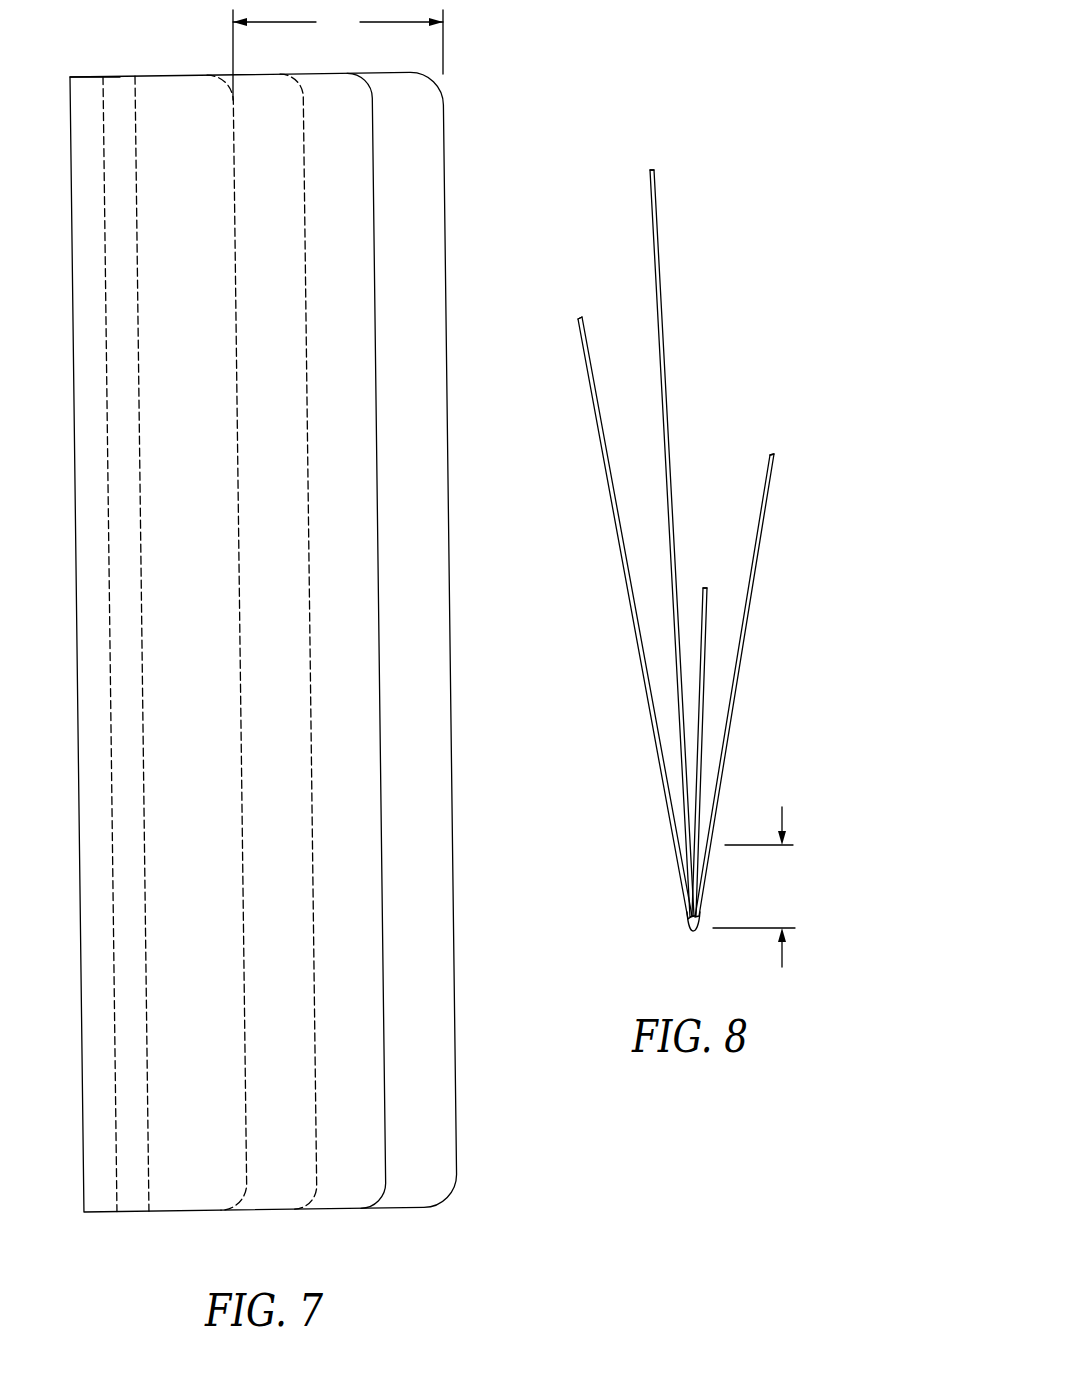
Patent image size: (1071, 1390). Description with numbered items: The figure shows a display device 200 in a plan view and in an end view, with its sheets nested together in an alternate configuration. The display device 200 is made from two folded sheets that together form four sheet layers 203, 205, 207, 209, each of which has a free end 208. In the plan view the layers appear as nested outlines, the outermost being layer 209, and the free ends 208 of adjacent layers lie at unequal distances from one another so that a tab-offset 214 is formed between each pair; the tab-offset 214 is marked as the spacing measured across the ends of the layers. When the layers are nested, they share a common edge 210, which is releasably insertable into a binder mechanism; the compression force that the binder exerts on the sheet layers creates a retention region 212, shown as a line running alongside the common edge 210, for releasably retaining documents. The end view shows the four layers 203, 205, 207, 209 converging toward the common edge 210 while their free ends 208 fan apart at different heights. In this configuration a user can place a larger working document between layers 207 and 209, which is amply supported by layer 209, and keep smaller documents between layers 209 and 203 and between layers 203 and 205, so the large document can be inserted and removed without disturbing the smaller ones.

In FIG. 7, the display device 200 is at (486, 76).
In FIG. 8, the display device 200 is at (586, 220).
In FIG. 7, the sheet layer 203 is at (175, 1211).
In FIG. 8, the sheet layer 203 is at (707, 625).
In FIG. 7, the sheet layer 205 is at (257, 1210).
In FIG. 8, the sheet layer 205 is at (763, 528).
In FIG. 7, the sheet layer 207 is at (328, 1209).
In FIG. 8, the sheet layer 207 is at (595, 412).
In FIG. 8, the free end 208 is at (652, 167).
In FIG. 7, the sheet layer 209 is at (400, 1209).
In FIG. 8, the sheet layer 209 is at (660, 220).
In FIG. 7, the common edge 210 is at (83, 84).
In FIG. 8, the common edge 210 is at (755, 887).
In FIG. 7, the retention region 212 is at (118, 90).
In FIG. 7, the tab-offset 214 is at (338, 54).